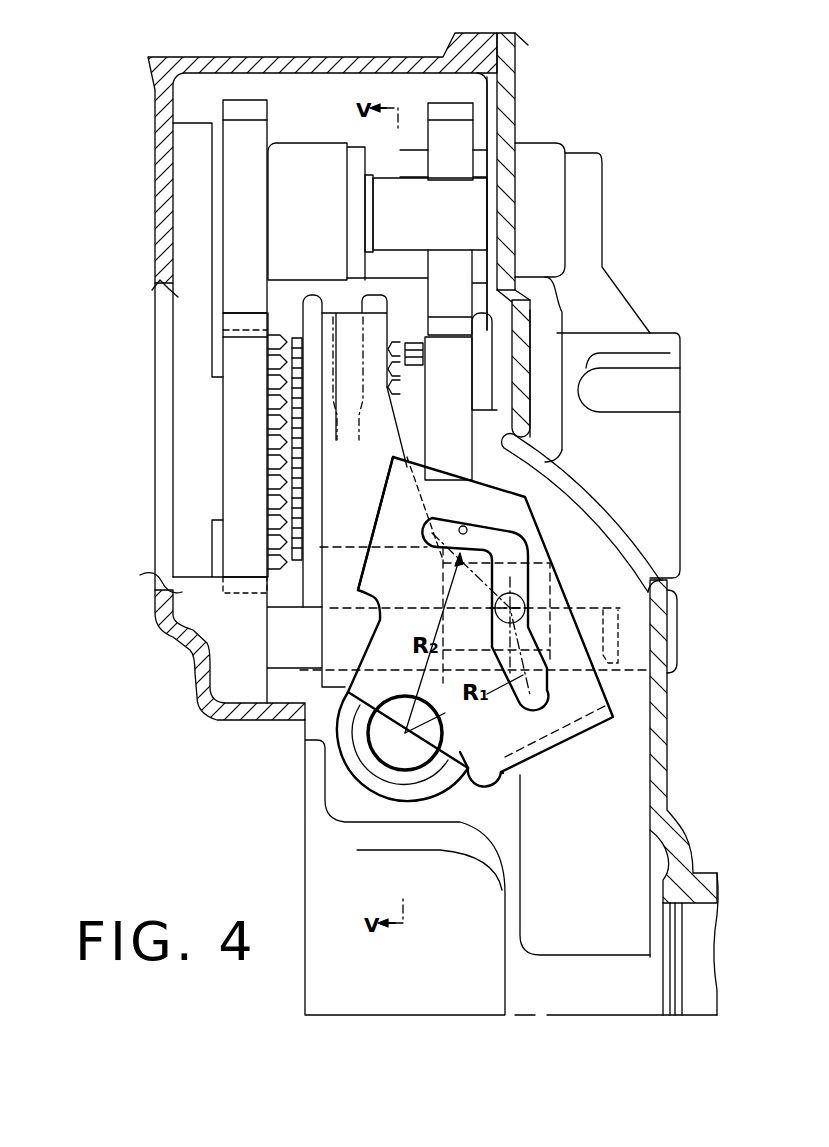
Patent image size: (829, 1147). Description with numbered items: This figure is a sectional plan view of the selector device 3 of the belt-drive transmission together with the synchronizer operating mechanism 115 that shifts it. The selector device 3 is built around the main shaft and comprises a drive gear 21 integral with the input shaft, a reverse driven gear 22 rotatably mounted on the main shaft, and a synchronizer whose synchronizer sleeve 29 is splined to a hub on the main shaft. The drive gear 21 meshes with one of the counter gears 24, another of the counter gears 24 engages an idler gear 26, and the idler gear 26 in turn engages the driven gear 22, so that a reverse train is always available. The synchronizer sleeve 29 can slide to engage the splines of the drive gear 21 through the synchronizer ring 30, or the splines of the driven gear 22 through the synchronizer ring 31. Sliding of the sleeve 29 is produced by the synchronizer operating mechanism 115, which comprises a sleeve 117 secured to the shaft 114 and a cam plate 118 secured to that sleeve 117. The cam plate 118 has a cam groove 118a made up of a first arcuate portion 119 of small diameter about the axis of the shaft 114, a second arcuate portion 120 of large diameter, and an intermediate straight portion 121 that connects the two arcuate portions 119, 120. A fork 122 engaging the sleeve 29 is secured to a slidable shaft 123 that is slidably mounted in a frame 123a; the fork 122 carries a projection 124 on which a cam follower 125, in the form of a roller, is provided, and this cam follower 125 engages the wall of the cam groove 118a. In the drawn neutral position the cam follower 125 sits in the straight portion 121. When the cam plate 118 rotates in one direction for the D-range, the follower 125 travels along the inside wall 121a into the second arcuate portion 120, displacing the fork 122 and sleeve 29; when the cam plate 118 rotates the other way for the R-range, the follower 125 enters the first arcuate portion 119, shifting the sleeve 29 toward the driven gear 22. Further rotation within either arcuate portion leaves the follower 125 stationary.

The selector device 3 is at (416, 92).
The drive gear 21 is at (463, 384).
The reverse driven gear 22 is at (260, 457).
The counter gears 24 is at (464, 167).
The idler gear 26 is at (257, 244).
The synchronizer sleeve 29 is at (320, 337).
The synchronizer ring 30 is at (407, 345).
The synchronizer ring 31 is at (280, 338).
The shaft 114 is at (432, 744).
The synchronizer operating mechanism 115 is at (624, 636).
The sleeve 117 is at (433, 800).
The cam plate 118 is at (563, 748).
The cam groove 118a is at (497, 708).
The first arcuate portion 119 is at (668, 715).
The second arcuate portion 120 is at (465, 520).
The intermediate straight portion 121 is at (528, 574).
The inside wall 121a is at (535, 592).
The fork 122 is at (376, 436).
The slidable shaft 123 is at (290, 665).
The frame 123a is at (200, 707).
The projection 124 is at (618, 531).
The cam follower 125 is at (368, 594).